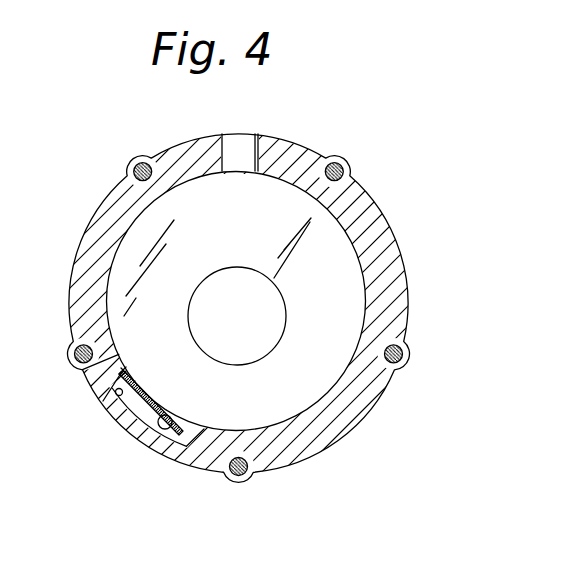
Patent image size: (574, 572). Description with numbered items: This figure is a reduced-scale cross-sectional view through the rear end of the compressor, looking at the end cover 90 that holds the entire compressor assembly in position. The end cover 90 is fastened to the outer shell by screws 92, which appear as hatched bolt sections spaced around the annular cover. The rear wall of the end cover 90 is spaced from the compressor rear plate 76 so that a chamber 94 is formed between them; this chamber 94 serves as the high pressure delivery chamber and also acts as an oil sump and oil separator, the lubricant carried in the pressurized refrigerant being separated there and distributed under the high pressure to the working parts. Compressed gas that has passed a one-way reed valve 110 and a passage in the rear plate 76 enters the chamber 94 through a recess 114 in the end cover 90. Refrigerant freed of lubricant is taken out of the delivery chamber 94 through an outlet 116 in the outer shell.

The compressor rear plate 76 is at (313, 401).
The end cover 90 is at (288, 453).
The screws 92 is at (70, 345).
The high pressure delivery chamber 94 is at (342, 339).
The one-way reed valve 110 is at (130, 375).
The recess 114 is at (110, 397).
The outlet 116 is at (247, 136).